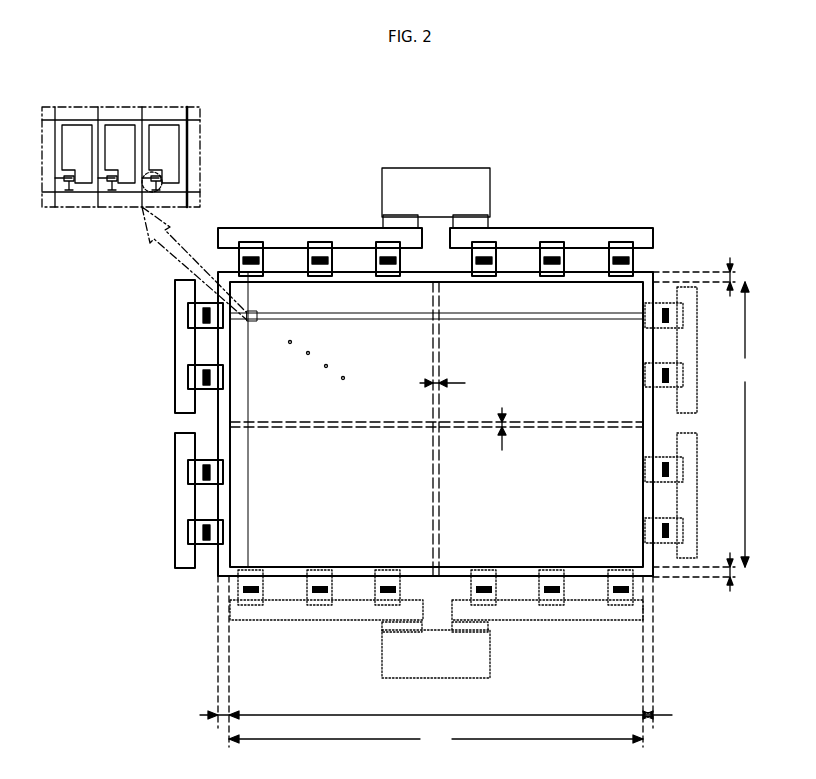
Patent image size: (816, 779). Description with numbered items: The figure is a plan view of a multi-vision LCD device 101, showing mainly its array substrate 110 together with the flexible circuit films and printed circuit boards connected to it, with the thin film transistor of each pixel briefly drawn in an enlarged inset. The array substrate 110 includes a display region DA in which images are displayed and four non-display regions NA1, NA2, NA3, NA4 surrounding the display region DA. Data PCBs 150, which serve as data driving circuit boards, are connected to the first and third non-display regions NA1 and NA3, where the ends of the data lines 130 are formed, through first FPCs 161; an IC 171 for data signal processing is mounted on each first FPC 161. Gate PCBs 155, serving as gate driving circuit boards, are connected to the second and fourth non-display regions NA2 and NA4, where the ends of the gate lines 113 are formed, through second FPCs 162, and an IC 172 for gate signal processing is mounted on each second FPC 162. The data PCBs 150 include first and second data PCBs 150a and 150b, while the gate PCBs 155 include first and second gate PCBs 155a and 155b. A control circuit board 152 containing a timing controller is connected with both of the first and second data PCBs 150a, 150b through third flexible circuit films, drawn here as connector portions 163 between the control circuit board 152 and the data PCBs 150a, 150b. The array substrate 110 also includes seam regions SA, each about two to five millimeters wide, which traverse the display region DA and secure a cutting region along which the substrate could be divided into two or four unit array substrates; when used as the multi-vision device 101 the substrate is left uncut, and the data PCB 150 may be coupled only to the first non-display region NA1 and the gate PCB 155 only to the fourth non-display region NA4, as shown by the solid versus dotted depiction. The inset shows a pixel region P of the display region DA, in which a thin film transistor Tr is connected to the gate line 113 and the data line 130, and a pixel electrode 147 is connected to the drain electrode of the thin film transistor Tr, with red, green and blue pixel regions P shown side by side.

The multi-vision LCD device 101 is at (674, 138).
The array substrate 110 is at (218, 566).
The gate line 113 is at (378, 321).
The data line 130 is at (256, 386).
The pixel electrode 147 is at (172, 136).
The pixel region P is at (182, 150).
The thin film transistor Tr is at (168, 178).
The data PCB 150 is at (480, 97).
The first data PCB 150a is at (347, 233).
The second data PCB 150b is at (537, 233).
The control circuit board 152 is at (448, 178).
The connector 163 is at (473, 222).
The first FPC 161 is at (251, 240).
The IC for data signal processing 171 is at (621, 255).
The gate PCB 155 is at (98, 442).
The first gate PCB 155a is at (178, 387).
The second gate PCB 155b is at (178, 443).
The second FPC 162 is at (186, 314).
The IC for gate signal processing 172 is at (203, 531).
The seam region SA is at (472, 410).
The display region DA is at (493, 515).
The first non-display region NA1 is at (712, 277).
The second non-display region NA2 is at (712, 572).
The third non-display region NA3 is at (663, 661).
The fourth non-display region NA4 is at (419, 661).